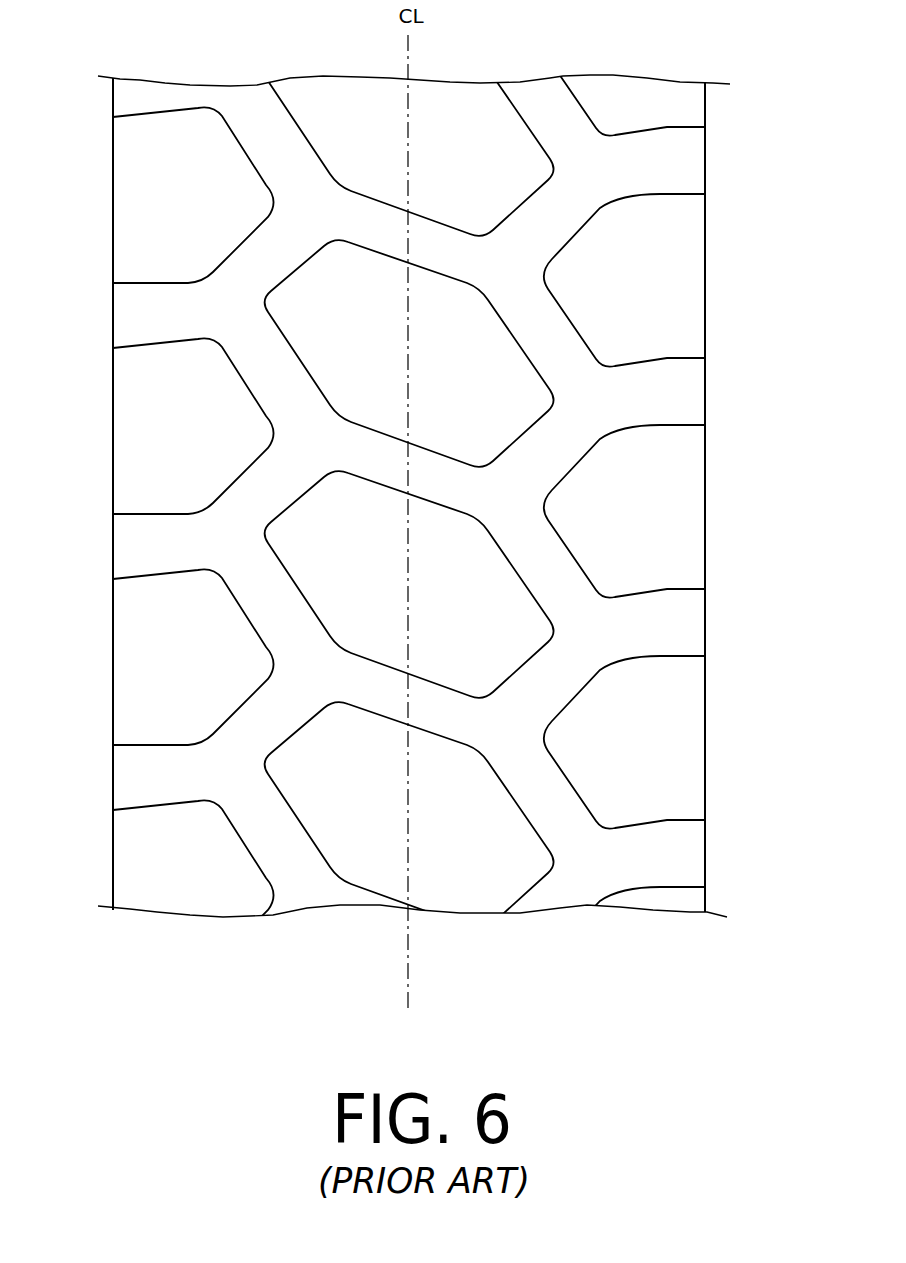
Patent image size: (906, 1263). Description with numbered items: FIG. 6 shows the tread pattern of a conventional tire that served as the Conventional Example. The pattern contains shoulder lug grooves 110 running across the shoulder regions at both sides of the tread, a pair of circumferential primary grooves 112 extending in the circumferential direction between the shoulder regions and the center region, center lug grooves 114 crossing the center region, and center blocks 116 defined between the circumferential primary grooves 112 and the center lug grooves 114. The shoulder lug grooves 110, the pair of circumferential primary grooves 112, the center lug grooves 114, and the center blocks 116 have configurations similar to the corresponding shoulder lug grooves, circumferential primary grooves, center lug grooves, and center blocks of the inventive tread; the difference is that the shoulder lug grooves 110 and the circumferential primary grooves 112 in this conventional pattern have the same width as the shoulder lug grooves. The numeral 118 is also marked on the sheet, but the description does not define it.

The shoulder lug grooves 110 is at (692, 178).
The pair of circumferential primary grooves 112 is at (568, 147).
The center lug grooves 114 is at (438, 477).
The center blocks 116 is at (447, 143).
The tread end 118 is at (112, 870).